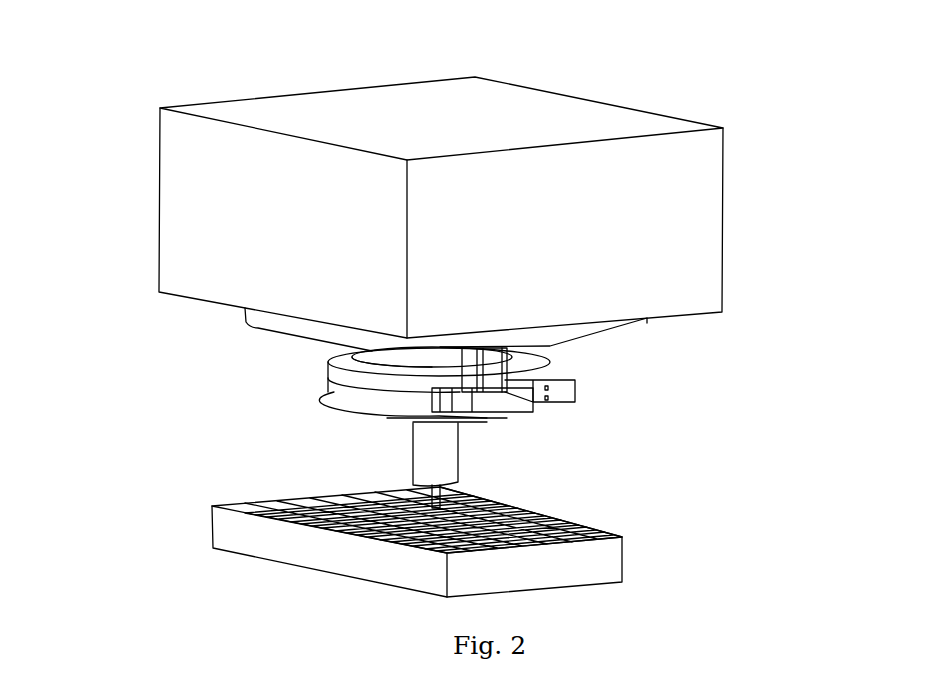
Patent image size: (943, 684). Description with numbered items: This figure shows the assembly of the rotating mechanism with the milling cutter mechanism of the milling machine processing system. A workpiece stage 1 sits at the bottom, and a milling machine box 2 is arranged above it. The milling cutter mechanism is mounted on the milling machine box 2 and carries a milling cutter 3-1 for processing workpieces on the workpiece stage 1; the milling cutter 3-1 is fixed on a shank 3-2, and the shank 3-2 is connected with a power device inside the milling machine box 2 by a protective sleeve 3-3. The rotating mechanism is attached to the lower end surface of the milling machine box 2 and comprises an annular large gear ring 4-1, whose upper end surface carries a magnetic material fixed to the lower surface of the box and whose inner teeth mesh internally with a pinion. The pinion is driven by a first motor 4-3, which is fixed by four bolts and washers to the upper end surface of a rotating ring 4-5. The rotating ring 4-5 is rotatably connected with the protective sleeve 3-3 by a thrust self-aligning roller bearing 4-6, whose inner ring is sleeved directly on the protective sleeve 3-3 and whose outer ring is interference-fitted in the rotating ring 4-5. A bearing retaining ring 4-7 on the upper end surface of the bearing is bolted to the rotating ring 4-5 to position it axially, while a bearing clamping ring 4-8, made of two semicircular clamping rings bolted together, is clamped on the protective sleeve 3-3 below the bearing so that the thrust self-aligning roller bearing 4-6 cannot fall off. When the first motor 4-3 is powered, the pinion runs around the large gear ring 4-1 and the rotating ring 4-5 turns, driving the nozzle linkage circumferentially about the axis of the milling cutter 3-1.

The workpiece stage 1 is at (380, 555).
The milling machine box 2 is at (298, 236).
The milling cutter 3-1 is at (433, 489).
The shank 3-2 is at (438, 458).
The protective sleeve 3-3 is at (385, 358).
The annular large gear ring 4-1 is at (468, 345).
The first motor 4-3 is at (491, 366).
The rotating ring 4-5 is at (566, 392).
The thrust self-aligning roller bearing 4-6 is at (387, 417).
The bearing retaining ring 4-7 is at (402, 372).
The bearing clamping ring 4-8 is at (330, 352).